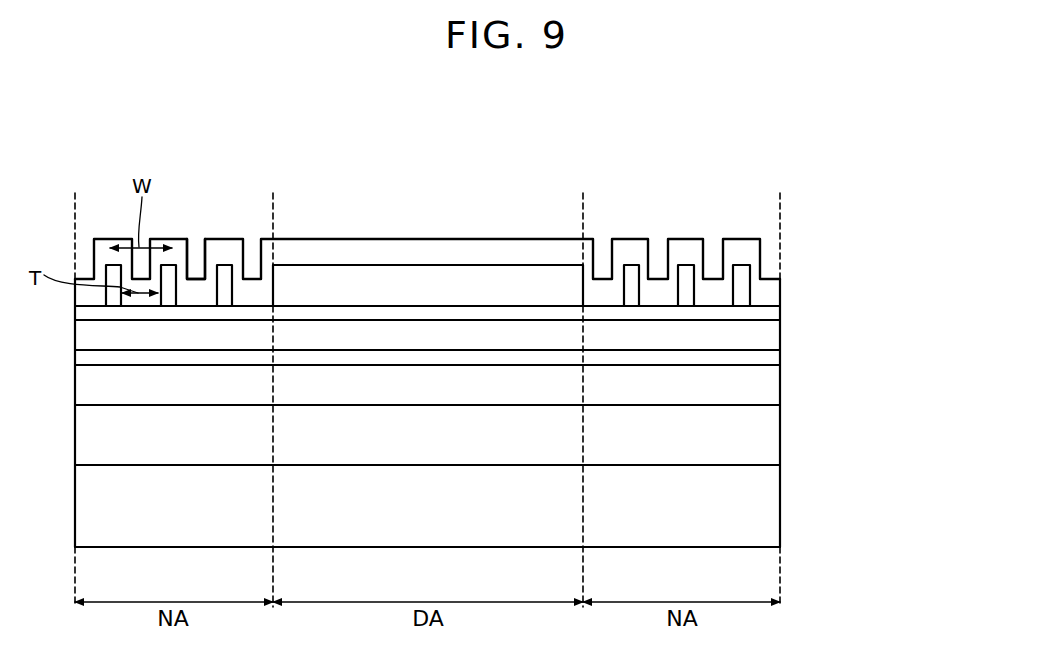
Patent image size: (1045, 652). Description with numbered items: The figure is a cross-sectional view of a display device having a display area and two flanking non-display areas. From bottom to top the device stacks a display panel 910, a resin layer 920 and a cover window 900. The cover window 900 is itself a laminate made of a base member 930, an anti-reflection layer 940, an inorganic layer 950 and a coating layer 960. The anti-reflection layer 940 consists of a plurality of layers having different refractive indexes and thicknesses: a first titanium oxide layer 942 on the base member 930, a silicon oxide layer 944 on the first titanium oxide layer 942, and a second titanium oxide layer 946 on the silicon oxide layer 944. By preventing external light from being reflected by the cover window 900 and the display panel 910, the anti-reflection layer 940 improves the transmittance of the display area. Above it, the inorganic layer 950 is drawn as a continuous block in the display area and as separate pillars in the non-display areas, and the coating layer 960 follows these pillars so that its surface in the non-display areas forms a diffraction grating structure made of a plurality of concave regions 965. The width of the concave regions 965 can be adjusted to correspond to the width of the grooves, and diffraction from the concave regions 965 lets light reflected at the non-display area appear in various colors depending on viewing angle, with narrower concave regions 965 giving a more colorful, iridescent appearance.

The cover window 900 is at (515, 359).
The display panel 910 is at (772, 507).
The resin layer 920 is at (772, 438).
The base member 930 is at (772, 387).
The anti-reflection layer 940 is at (490, 337).
The first titanium oxide layer 942 is at (770, 360).
The silicon oxide layer 944 is at (770, 337).
The second titanium oxide layer 946 is at (770, 313).
The inorganic layer 950 is at (490, 276).
The coating layer 960 is at (399, 248).
The concave regions 965 is at (197, 253).